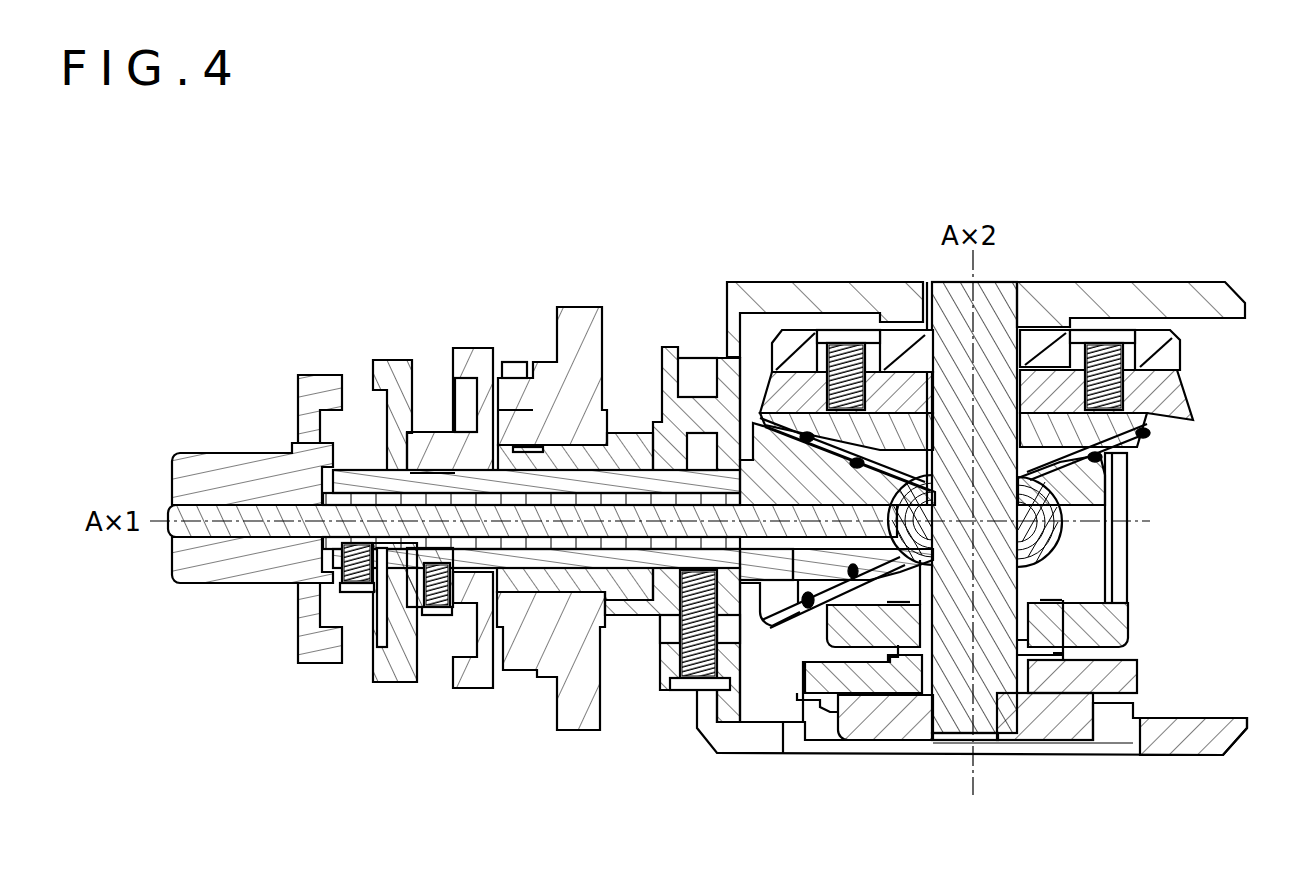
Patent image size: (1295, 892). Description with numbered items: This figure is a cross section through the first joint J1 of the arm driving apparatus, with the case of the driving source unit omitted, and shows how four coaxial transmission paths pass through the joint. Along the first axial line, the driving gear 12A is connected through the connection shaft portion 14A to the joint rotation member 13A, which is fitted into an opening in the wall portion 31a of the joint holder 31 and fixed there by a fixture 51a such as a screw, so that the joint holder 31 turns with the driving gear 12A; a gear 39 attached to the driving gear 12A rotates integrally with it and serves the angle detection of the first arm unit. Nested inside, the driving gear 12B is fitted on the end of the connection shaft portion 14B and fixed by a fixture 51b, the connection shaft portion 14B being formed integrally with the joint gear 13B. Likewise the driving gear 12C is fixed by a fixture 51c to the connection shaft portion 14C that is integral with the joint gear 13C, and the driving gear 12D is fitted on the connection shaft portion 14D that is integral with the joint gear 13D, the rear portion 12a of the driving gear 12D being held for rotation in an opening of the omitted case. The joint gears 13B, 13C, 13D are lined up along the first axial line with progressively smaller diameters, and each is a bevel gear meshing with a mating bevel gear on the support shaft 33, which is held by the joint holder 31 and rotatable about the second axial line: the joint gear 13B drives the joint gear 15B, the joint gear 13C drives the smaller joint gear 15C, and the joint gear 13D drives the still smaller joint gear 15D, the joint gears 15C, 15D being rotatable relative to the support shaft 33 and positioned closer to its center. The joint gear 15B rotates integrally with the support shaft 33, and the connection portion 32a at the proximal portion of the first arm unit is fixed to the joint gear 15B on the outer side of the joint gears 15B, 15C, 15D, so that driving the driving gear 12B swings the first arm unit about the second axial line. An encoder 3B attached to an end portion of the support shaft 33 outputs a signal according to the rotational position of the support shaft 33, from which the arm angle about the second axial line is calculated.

The encoder 3B is at (1063, 735).
The rear portion 12a is at (225, 462).
The driving gear 12A is at (580, 335).
The driving gear 12B is at (480, 365).
The driving gear 12C is at (407, 433).
The driving gear 12D is at (320, 390).
The joint rotation member 13A is at (660, 422).
The joint gear 13B is at (745, 645).
The joint gear 13C is at (780, 613).
The joint gear 13D is at (918, 590).
The connection shaft portion 14A is at (633, 592).
The connection shaft portion 14B is at (568, 590).
The connection shaft portion 14C is at (517, 663).
The connection shaft portion 14D is at (292, 527).
The joint gear 15B is at (1172, 397).
The joint gear 15C is at (1140, 447).
The joint gear 15D is at (1072, 480).
The joint holder 31 is at (1144, 295).
The wall portion 31a is at (703, 365).
The connection portion 32a is at (1168, 347).
The support shaft 33 is at (1003, 303).
The gear 39 is at (518, 365).
The fixture 51a is at (692, 672).
The fixture 51b is at (437, 615).
The fixture 51c is at (355, 593).
The first joint J1 is at (1197, 263).